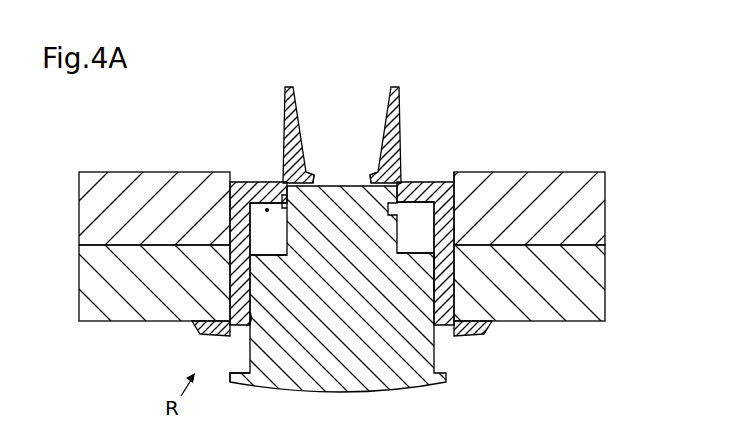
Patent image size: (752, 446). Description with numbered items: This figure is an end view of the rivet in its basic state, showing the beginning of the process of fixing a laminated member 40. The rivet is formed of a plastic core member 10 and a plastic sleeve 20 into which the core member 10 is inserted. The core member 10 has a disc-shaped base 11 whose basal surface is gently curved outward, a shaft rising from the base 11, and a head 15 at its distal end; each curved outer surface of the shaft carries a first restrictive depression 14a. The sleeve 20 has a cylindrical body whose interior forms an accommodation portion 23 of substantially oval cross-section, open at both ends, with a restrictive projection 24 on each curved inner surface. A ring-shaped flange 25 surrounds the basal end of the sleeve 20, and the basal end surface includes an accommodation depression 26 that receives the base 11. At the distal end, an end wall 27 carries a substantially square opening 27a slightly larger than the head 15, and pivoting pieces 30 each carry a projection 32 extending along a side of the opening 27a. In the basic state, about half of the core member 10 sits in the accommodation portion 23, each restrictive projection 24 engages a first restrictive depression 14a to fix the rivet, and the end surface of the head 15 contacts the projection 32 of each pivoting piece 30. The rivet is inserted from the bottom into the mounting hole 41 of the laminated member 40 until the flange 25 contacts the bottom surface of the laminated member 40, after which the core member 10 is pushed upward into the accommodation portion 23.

The core member 10 is at (320, 393).
The base 11 is at (241, 383).
The first restrictive depression 14a is at (433, 271).
The head 15 is at (399, 240).
The sleeve 20 is at (421, 181).
The accommodation portion 23 is at (267, 209).
The restrictive projection 24 is at (433, 265).
The flange 25 is at (484, 333).
The accommodation depression 26 is at (240, 331).
The end wall 27 is at (243, 181).
The opening 27a is at (269, 229).
The pivoting piece 30 is at (285, 92).
The projection 32 is at (302, 183).
The laminated member 40 is at (605, 203).
The mounting hole 41 is at (455, 172).